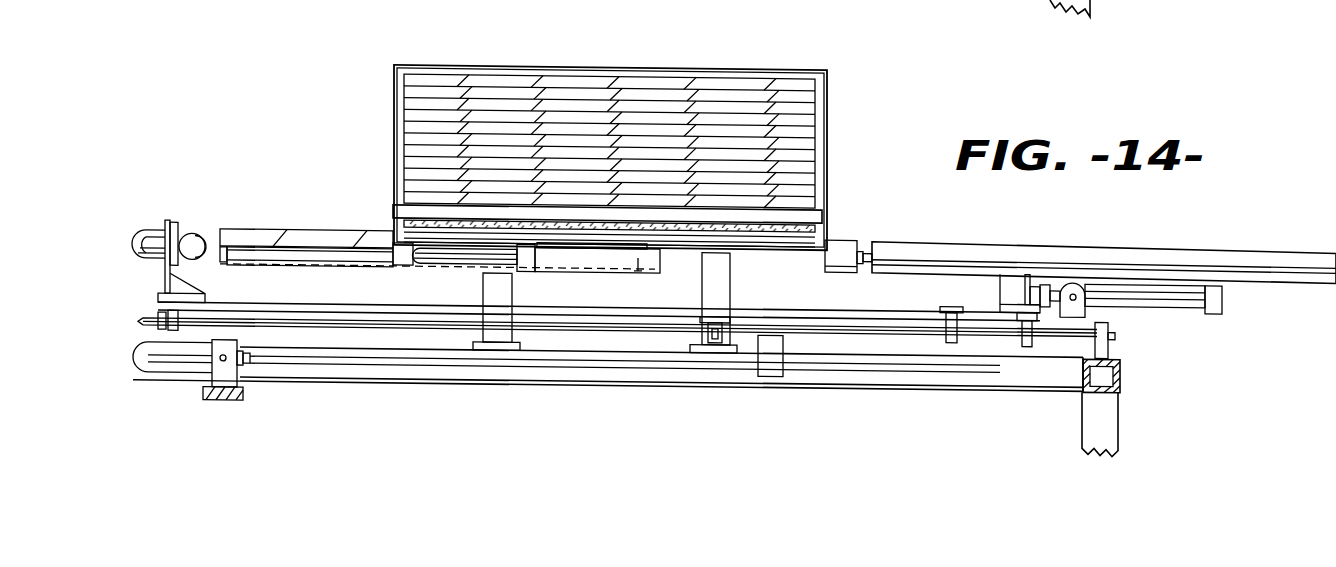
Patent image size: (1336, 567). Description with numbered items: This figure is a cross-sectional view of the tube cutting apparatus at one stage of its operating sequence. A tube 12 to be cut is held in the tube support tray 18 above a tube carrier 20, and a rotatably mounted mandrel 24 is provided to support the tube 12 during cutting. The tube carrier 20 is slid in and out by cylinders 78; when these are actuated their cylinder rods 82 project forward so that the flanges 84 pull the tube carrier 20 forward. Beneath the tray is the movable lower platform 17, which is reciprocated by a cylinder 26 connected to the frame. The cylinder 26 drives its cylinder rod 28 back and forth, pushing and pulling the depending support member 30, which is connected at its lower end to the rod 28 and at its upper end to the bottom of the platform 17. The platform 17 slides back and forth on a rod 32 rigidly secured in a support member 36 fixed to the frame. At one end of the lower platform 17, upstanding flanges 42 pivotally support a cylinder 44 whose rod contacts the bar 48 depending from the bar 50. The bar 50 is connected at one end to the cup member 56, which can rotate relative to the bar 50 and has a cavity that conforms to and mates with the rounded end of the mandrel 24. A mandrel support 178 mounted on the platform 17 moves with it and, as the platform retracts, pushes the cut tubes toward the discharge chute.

The tube 12 is at (635, 70).
The tube support tray 18 is at (828, 140).
The mandrel support 178 is at (165, 225).
The mandrel 24 is at (215, 204).
The flanges 84 is at (218, 264).
The cylinder rods 82 is at (290, 258).
The tube carrier 20 is at (340, 266).
The cylinders 78 is at (450, 261).
The movable lower platform 17 is at (660, 309).
The rod 32 is at (905, 327).
The cylinder 26 is at (152, 365).
The cylinder rod 28 is at (330, 361).
The depending support member 30 is at (768, 358).
The cup member 56 is at (845, 262).
The bar 50 is at (992, 241).
The bar 48 is at (1002, 281).
The upstanding flanges 42 is at (1078, 300).
The cylinder 44 is at (1222, 282).
The support member 36 is at (1102, 334).